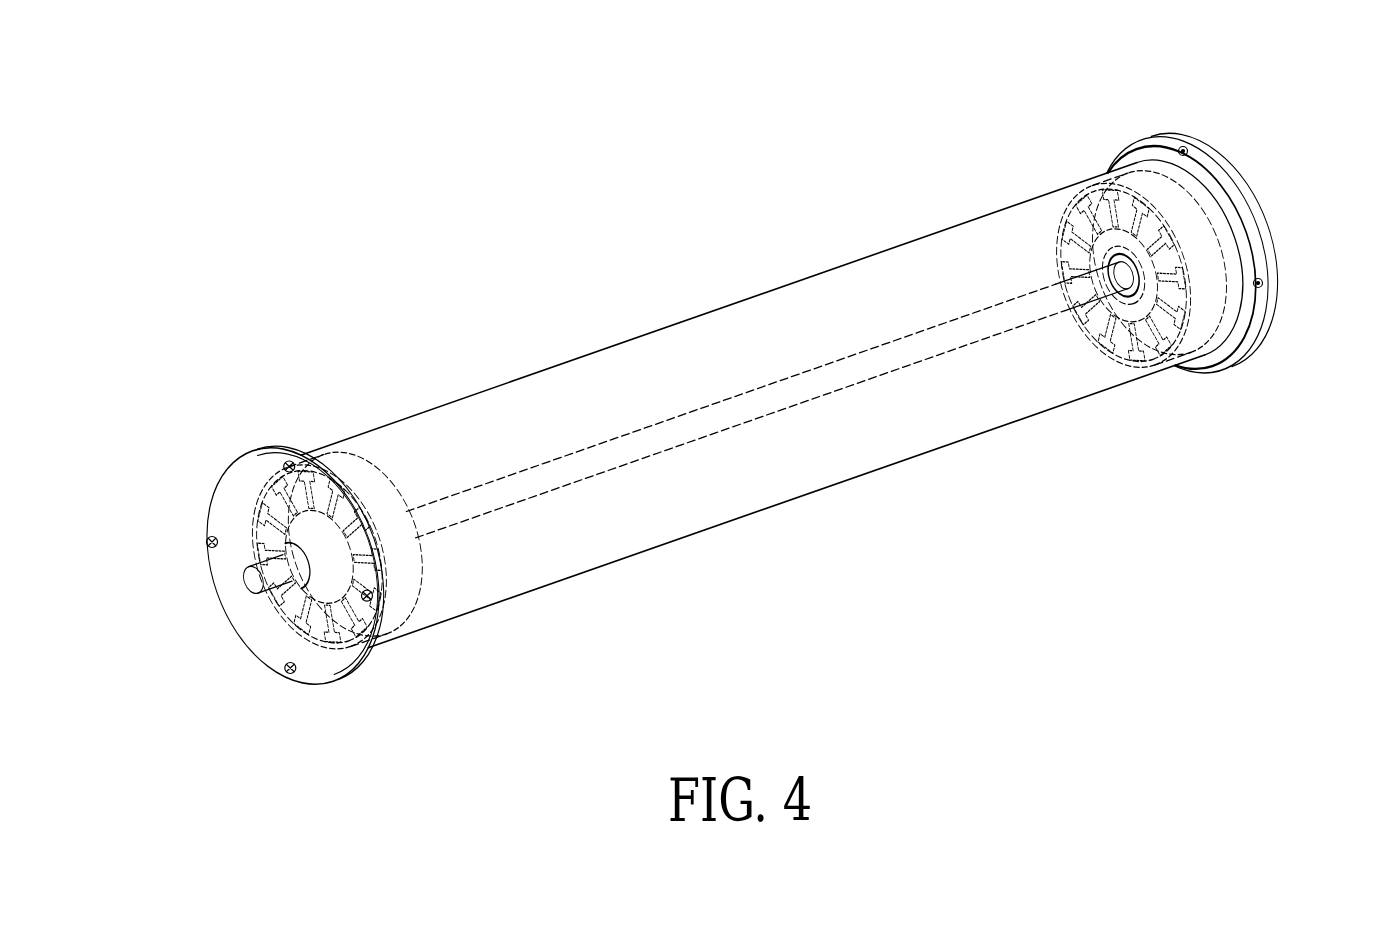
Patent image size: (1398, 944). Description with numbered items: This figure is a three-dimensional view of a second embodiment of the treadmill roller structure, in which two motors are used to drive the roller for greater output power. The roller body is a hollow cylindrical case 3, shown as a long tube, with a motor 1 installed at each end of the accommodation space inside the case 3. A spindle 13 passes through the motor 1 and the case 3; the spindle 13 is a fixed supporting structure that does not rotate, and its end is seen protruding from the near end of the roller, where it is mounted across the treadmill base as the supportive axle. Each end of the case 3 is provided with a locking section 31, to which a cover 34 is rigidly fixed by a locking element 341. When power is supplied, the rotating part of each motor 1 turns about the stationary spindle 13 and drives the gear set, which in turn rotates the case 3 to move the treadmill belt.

The motor 1 is at (713, 390).
The case 3 is at (480, 391).
The spindle 13 is at (283, 628).
The locking section 31 is at (322, 462).
The cover 34 is at (240, 487).
The locking element 341 is at (207, 539).